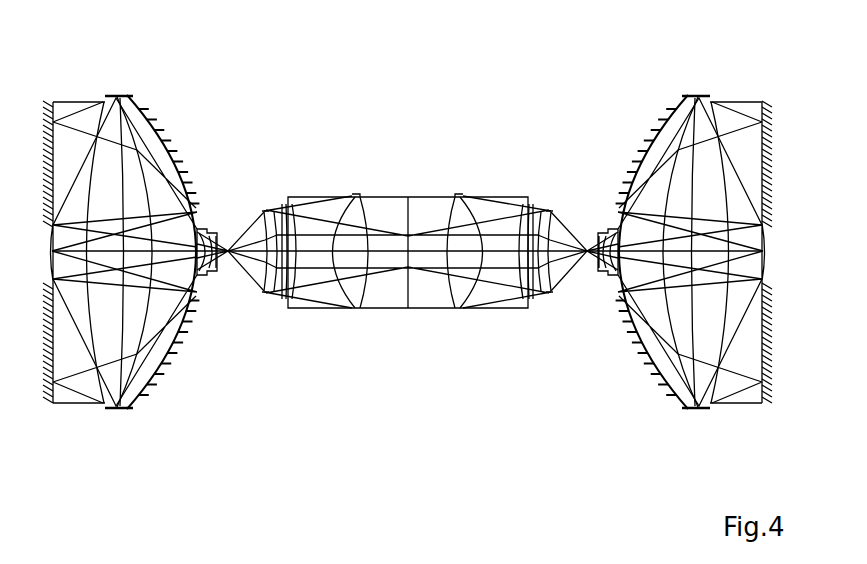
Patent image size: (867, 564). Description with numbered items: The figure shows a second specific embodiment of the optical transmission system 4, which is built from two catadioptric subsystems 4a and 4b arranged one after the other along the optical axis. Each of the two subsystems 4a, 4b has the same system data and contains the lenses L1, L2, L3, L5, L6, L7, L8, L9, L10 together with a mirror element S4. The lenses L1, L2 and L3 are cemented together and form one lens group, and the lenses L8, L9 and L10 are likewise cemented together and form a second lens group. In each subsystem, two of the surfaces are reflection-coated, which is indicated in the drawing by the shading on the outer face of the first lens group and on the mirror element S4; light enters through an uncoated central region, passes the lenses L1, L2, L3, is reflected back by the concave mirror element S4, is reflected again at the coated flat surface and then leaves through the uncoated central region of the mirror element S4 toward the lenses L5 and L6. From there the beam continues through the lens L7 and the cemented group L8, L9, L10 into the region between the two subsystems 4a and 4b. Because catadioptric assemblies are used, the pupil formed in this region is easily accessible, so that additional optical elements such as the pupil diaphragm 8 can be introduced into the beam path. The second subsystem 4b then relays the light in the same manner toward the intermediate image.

The transmission system 4 is at (518, 113).
The first subsystem 4a is at (407, 436).
The second subsystem 4b is at (763, 435).
The pupil diaphragm 8 is at (410, 207).
The lens L1 is at (65, 104).
The lens L2 is at (100, 100).
The lens L3 is at (115, 96).
The mirror element S4 is at (148, 117).
The lens L5 is at (203, 277).
The lens L6 is at (218, 273).
The lens L7 is at (265, 210).
The lens L8 is at (284, 306).
The lens L9 is at (307, 183).
The lens L10 is at (355, 195).